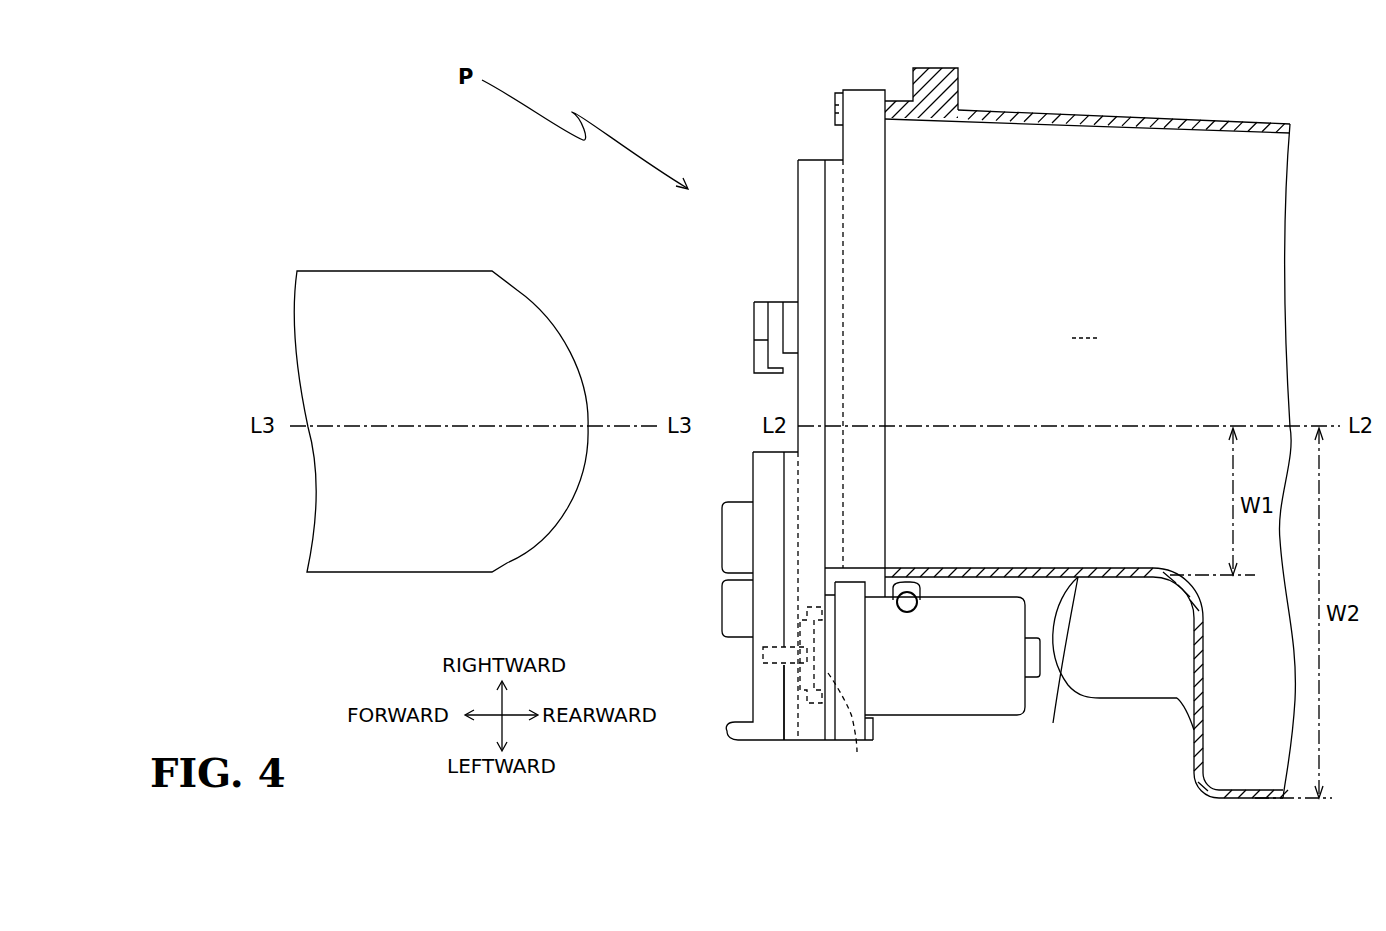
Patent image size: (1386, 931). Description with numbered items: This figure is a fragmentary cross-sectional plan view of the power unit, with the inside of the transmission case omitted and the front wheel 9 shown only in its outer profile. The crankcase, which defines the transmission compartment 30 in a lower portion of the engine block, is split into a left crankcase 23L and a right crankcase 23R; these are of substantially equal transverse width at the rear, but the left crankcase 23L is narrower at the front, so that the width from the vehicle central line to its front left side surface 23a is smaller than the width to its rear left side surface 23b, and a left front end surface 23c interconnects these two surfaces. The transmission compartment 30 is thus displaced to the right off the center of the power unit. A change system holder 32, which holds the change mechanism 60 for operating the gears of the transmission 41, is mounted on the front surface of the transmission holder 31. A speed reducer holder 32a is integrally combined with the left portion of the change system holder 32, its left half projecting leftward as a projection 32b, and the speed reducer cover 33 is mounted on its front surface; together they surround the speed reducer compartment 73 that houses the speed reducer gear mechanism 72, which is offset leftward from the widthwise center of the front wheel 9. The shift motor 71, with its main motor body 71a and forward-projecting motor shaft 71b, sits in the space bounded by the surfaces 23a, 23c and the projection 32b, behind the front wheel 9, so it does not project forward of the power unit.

The front wheel 9 is at (468, 298).
The right crankcase 23R is at (1105, 80).
The left crankcase 23L is at (1243, 728).
The front left side surface 23a is at (1103, 666).
The rear left side surface 23b is at (1253, 802).
The left front end surface 23c is at (1177, 700).
The transmission compartment 30 is at (1085, 326).
The transmission holder 31 is at (865, 118).
The change system holder 32 is at (812, 208).
The speed reducer holder 32a is at (792, 527).
The projection 32b is at (792, 718).
The speed reducer cover 33 is at (753, 558).
The transmission 41 is at (1100, 377).
The change mechanism 60 is at (816, 267).
The shift motor 71 is at (932, 698).
The main motor body 71a is at (952, 684).
The motor shaft 71b is at (854, 684).
The speed reducer gear mechanism 72 is at (768, 628).
The speed reducer compartment 73 is at (766, 682).